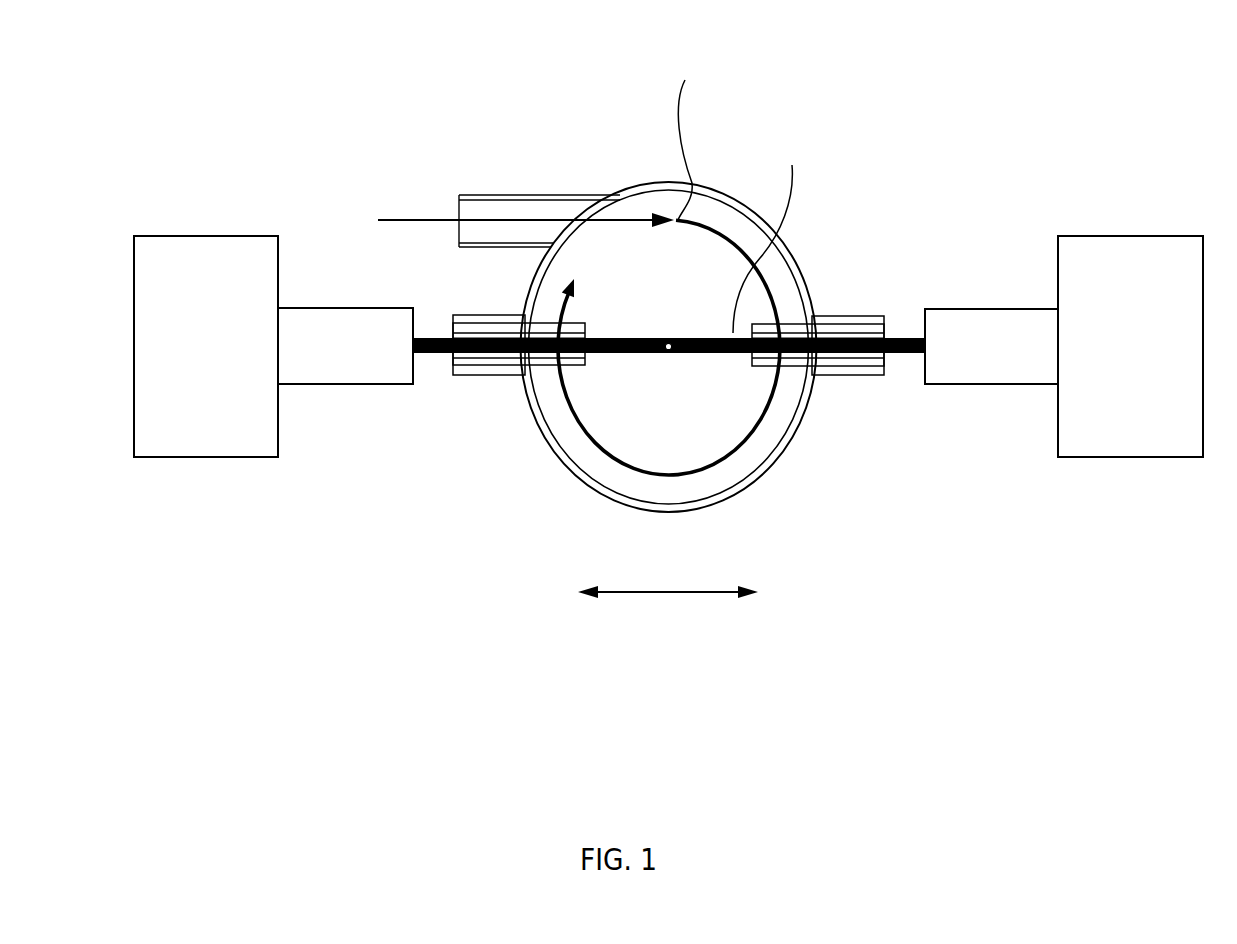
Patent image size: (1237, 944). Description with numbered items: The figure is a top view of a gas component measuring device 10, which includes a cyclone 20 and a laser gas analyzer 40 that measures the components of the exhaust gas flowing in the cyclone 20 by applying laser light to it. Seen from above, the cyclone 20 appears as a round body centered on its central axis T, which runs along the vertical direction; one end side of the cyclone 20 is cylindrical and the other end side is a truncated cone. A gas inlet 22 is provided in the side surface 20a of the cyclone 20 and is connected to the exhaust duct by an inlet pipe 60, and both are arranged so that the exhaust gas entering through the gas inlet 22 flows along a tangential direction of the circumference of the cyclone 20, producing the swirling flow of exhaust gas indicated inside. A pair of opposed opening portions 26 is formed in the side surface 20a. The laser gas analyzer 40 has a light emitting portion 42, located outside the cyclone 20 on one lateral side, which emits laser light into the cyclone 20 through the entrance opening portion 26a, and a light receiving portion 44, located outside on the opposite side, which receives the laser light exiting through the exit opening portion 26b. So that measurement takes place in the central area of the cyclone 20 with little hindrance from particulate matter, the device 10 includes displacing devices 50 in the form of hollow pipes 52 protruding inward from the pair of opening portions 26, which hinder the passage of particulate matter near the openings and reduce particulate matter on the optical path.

The gas component measuring device 10 is at (668, 345).
The cyclone 20 is at (632, 337).
The side surface 20a is at (585, 477).
The gas inlet 22 is at (586, 200).
The opening portions 26 is at (673, 294).
The entrance opening portion 26a is at (528, 332).
The exit opening portion 26b is at (806, 330).
The laser gas analyzer 40 is at (668, 406).
The light emitting portion 42 is at (199, 487).
The light receiving portion 44 is at (1133, 488).
The displacing devices 50 is at (668, 393).
The hollow pipes 52 is at (570, 367).
The inlet pipe 60 is at (497, 195).
The central axis T is at (669, 343).